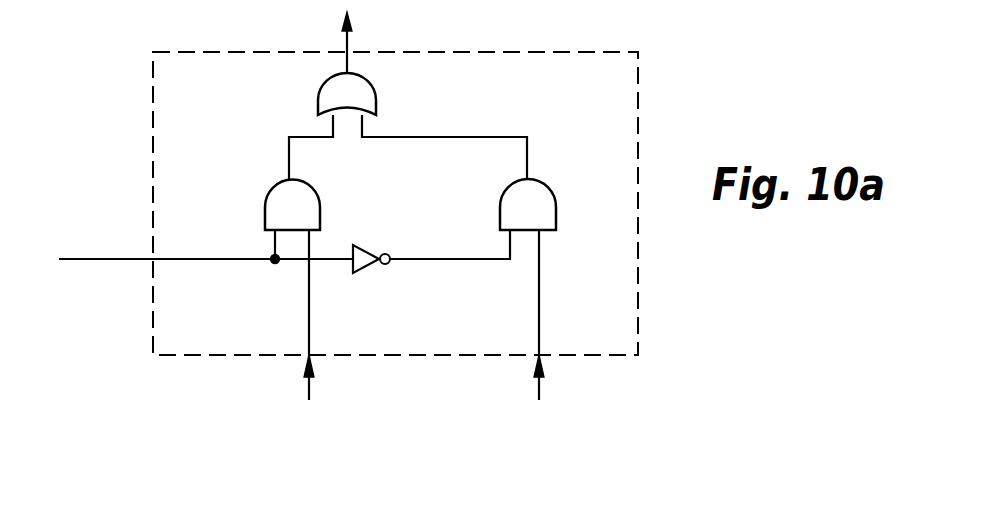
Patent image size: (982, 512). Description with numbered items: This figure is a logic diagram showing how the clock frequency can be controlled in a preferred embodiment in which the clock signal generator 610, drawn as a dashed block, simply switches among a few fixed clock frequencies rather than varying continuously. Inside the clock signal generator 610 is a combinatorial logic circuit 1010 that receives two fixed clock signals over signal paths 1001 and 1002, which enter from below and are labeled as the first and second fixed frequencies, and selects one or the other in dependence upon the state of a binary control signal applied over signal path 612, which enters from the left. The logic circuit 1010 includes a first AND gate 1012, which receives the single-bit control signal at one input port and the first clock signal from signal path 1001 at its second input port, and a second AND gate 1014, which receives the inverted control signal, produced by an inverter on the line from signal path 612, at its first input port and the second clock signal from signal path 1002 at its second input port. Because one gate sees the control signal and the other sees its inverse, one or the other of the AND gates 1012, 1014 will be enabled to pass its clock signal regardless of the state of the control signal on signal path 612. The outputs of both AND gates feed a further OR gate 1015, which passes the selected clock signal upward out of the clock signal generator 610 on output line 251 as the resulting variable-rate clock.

The clock signal generator 610 is at (614, 93).
The combinatorial logic circuit 1010 is at (398, 200).
The AND gate 1012 is at (264, 213).
The AND gate 1014 is at (500, 212).
The OR gate 1015 is at (377, 99).
The output signal line 251 is at (354, 22).
The signal path 612 is at (99, 258).
The signal path 1001 is at (308, 313).
The signal path 1002 is at (540, 313).